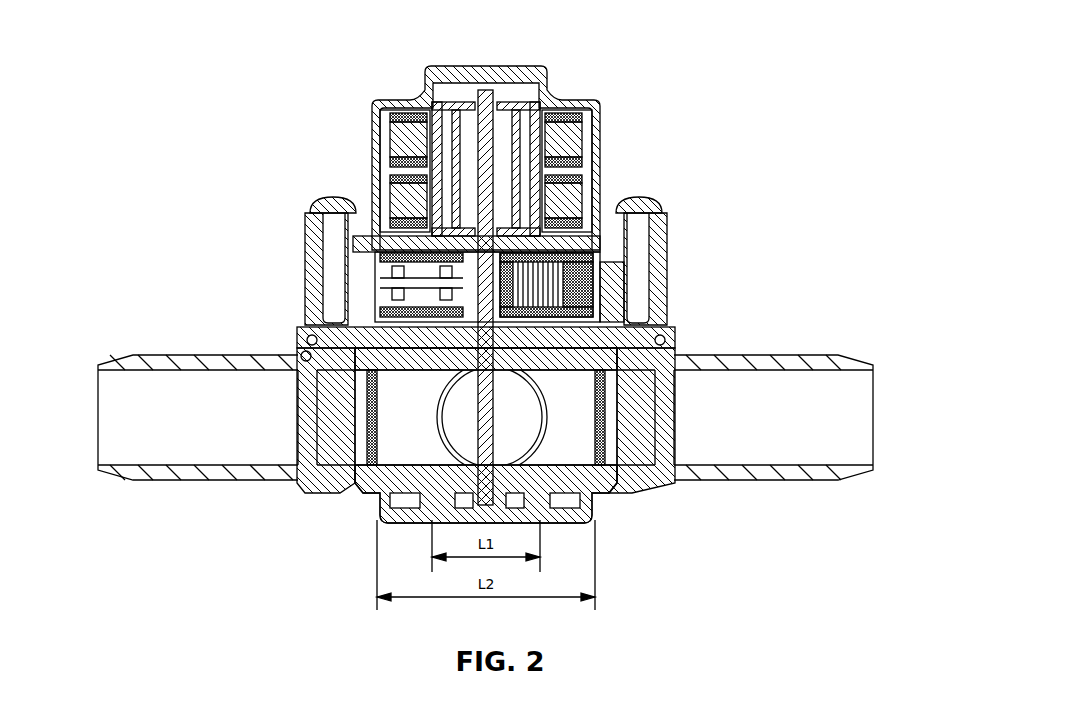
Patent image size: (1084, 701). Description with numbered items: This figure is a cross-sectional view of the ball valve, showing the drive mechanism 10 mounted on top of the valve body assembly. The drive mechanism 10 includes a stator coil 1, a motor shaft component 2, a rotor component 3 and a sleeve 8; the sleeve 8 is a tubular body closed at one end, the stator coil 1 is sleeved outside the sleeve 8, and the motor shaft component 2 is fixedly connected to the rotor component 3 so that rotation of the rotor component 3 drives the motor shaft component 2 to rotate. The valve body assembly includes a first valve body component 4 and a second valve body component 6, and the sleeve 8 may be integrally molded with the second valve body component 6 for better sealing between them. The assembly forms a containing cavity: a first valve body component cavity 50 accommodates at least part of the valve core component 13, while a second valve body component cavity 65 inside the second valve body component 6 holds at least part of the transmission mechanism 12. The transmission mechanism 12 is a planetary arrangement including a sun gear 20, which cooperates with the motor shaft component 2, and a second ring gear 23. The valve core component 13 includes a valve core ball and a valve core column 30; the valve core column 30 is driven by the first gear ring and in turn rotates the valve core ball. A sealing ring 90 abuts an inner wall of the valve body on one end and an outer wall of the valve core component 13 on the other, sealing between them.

The stator coil 1 is at (545, 253).
The motor shaft component 2 is at (535, 174).
The rotor component 3 is at (548, 160).
The first valve body component 4 is at (337, 482).
The second valve body component 6 is at (667, 267).
The sleeve 8 is at (522, 95).
The drive mechanism 10 is at (386, 170).
The transmission mechanism 12 is at (377, 283).
The valve core component 13 is at (653, 353).
The sun gear 20 is at (627, 223).
The second ring gear 23 is at (373, 263).
The valve core column 30 is at (593, 313).
The first valve body component cavity 50 is at (613, 493).
The second valve body component cavity 65 is at (600, 280).
The sealing ring 90 is at (297, 357).